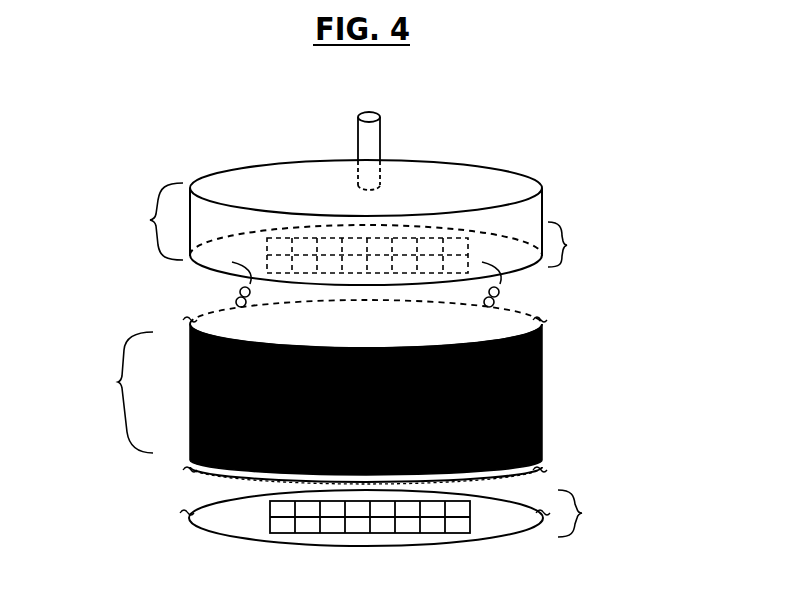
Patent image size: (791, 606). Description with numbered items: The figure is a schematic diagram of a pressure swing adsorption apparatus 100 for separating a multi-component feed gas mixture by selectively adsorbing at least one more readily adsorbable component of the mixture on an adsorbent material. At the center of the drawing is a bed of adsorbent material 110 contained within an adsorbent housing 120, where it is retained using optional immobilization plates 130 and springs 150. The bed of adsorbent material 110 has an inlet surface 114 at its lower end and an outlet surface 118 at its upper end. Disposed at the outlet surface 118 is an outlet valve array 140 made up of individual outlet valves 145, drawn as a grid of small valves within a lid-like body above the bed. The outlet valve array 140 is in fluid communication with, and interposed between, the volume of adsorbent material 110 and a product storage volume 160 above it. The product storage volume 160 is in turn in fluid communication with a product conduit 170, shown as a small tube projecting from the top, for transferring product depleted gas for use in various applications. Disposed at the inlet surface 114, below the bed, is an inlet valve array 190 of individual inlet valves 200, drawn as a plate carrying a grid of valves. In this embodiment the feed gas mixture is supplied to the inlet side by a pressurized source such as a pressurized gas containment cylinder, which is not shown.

The pressure swing adsorption apparatus 100 is at (207, 155).
The bed of adsorbent material 110 is at (542, 393).
The inlet surface 114 is at (205, 471).
The outlet surface 118 is at (462, 330).
The adsorbent housing 120 is at (118, 382).
The immobilization plates 130 is at (217, 323).
The outlet valve array 140 is at (567, 245).
The outlet valves 145 is at (452, 247).
The springs 150 is at (238, 295).
The product storage volume 160 is at (150, 220).
The product conduit 170 is at (382, 125).
The inlet valve array 190 is at (582, 513).
The inlet valves 200 is at (460, 523).